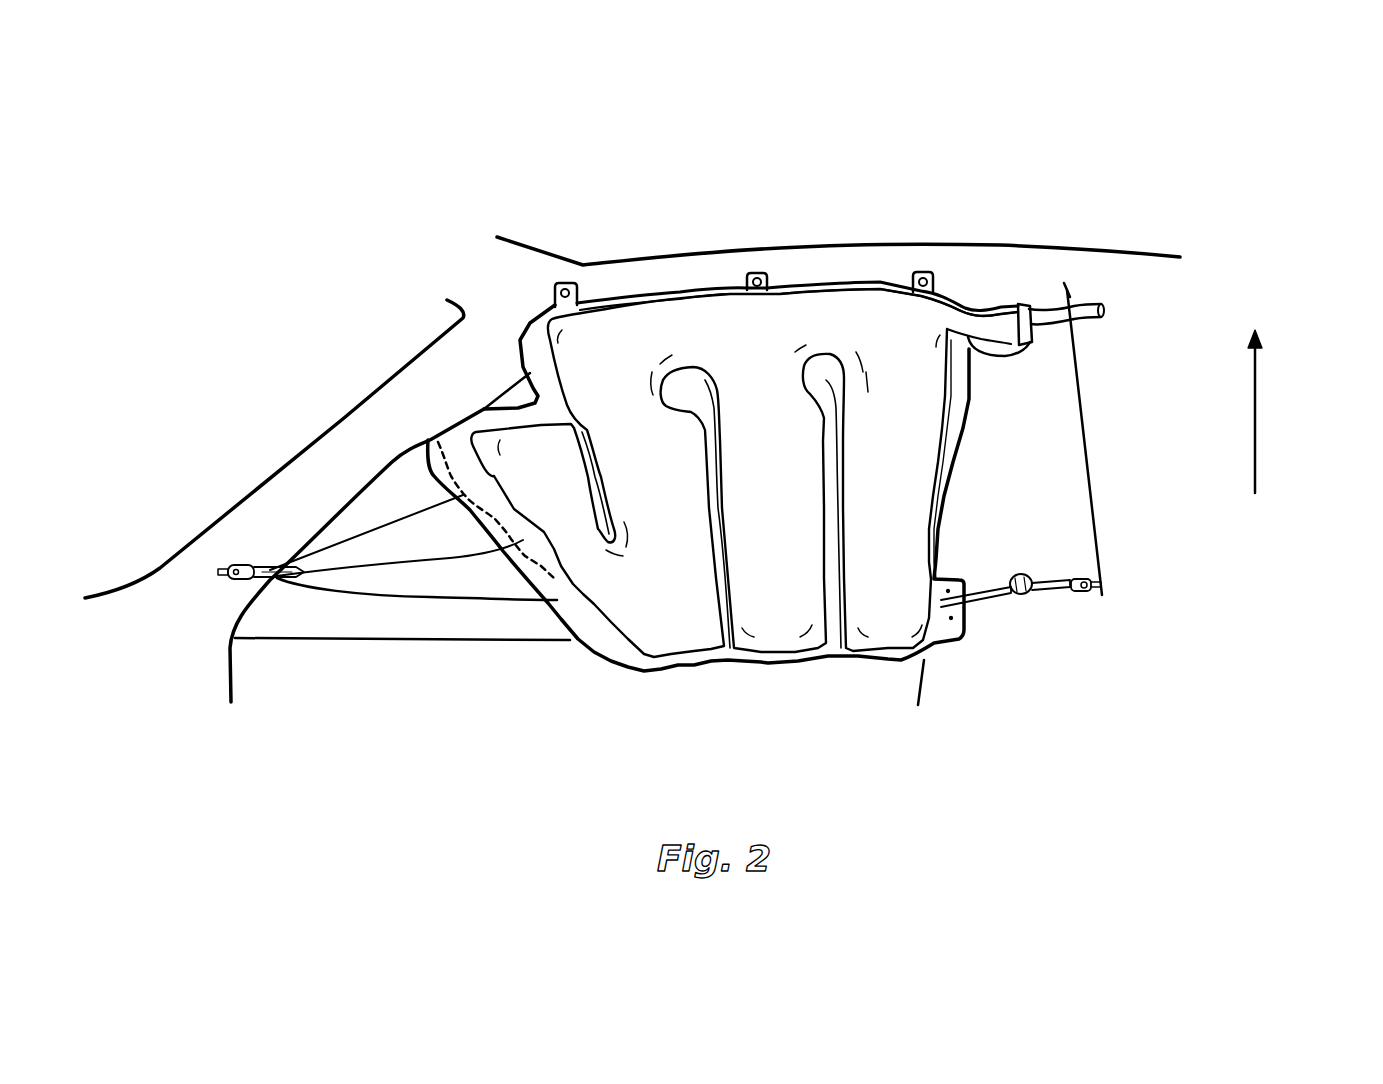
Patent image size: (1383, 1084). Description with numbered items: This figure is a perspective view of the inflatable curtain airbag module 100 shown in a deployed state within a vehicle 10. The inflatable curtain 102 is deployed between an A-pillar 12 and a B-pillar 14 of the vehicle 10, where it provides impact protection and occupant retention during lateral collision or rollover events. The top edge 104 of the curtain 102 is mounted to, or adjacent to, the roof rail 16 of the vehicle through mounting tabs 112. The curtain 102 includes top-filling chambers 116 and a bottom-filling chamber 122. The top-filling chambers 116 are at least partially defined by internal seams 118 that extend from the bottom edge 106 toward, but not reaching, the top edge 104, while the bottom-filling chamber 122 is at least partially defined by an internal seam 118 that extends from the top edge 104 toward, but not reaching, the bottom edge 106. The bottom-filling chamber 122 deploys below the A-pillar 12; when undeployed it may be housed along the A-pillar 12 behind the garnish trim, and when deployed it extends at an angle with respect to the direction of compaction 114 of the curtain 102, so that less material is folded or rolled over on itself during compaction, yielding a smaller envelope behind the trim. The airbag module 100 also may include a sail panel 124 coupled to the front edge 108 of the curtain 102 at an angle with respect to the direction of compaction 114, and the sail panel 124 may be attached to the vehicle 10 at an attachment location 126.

The vehicle 10 is at (195, 654).
The A-pillar 12 is at (417, 380).
The B-pillar 14 is at (1020, 425).
The roof rail 16 is at (865, 253).
The inflatable curtain airbag module 100 is at (981, 636).
The inflatable curtain 102 is at (635, 668).
The top edge 104 is at (658, 290).
The bottom edge 106 is at (693, 668).
The front edge 108 is at (438, 474).
The mounting tabs 112 is at (562, 280).
The direction of compaction 114 is at (1257, 418).
The top-filling chambers 116 is at (689, 541).
The internal seams 118 is at (829, 499).
The bottom-filling chamber 122 is at (537, 483).
The sail panel 124 is at (370, 517).
The attachment location 126 is at (240, 565).